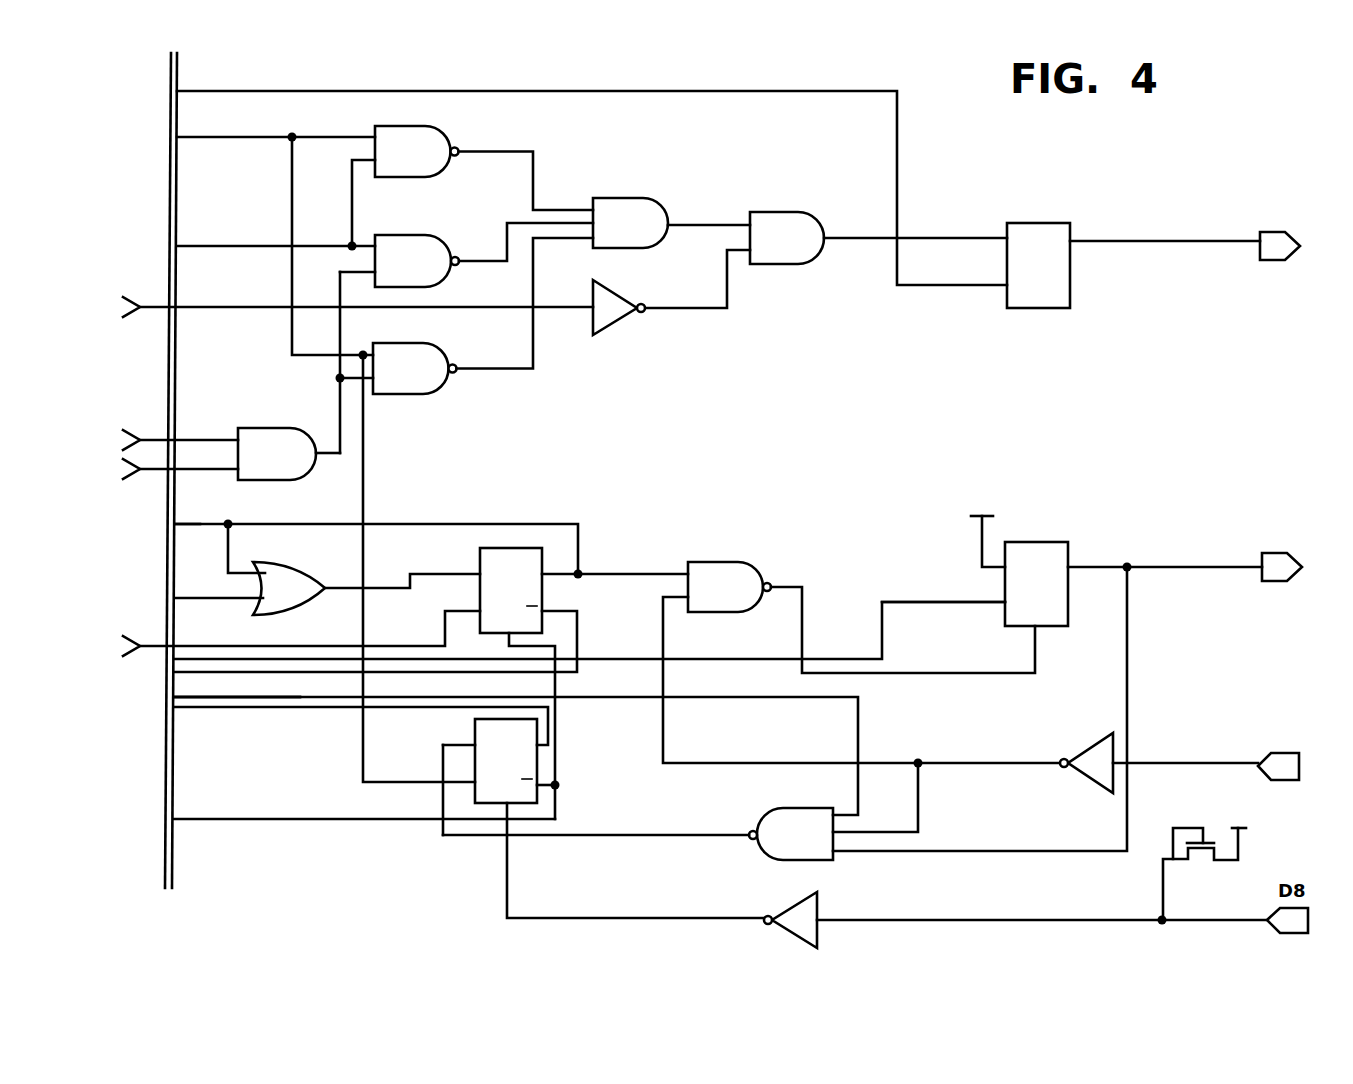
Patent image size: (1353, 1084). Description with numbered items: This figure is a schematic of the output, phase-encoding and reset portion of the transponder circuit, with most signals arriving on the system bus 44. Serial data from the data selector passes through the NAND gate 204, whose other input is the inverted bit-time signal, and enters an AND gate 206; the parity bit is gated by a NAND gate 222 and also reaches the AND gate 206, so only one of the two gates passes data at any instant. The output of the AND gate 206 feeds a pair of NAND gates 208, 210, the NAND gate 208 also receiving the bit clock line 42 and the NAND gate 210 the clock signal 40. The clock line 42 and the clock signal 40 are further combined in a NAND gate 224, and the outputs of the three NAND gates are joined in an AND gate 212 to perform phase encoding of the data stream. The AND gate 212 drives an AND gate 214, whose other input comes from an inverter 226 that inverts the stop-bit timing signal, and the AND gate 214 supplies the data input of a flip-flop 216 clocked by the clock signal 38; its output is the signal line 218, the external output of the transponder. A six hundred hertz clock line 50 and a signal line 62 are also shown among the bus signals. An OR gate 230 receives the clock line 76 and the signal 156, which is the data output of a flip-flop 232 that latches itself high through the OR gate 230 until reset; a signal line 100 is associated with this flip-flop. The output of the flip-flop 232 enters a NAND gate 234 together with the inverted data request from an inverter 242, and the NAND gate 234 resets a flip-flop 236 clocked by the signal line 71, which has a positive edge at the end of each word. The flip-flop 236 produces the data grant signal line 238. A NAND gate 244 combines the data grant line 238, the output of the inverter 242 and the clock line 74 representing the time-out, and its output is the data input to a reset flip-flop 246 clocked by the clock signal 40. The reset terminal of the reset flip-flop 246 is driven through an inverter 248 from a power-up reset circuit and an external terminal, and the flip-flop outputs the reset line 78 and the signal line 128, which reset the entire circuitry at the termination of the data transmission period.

The clock signal 38 is at (902, 113).
The clock signal 40 is at (228, 134).
The clock line 42 is at (222, 243).
The system bus 44 is at (172, 878).
The clock line 50 is at (222, 300).
The signal line 62 is at (147, 639).
The signal line 71 is at (918, 605).
The clock line 74 is at (293, 695).
The clock line 76 is at (189, 601).
The reset line 78 is at (223, 816).
The signal line 100 is at (583, 610).
The signal line 128 is at (222, 708).
The signal 156 is at (583, 523).
The NAND gate 204 is at (160, 480).
The AND gate 206 is at (285, 468).
The NAND gate 208 is at (422, 274).
The NAND gate 210 is at (424, 381).
The AND gate 212 is at (643, 236).
The AND gate 214 is at (802, 251).
The flip-flop 216 is at (1061, 283).
The signal line 218 is at (1243, 236).
The NAND gate 222 is at (149, 433).
The NAND gate 224 is at (428, 161).
The inverter 226 is at (627, 322).
The OR gate 230 is at (305, 600).
The flip-flop 232 is at (527, 605).
The NAND gate 234 is at (737, 598).
The flip-flop 236 is at (1052, 598).
The signal line 238 is at (1226, 561).
The inverter 242 is at (1082, 753).
The NAND gate 244 is at (812, 845).
The reset flip-flop 246 is at (525, 771).
The inverter 248 is at (782, 903).